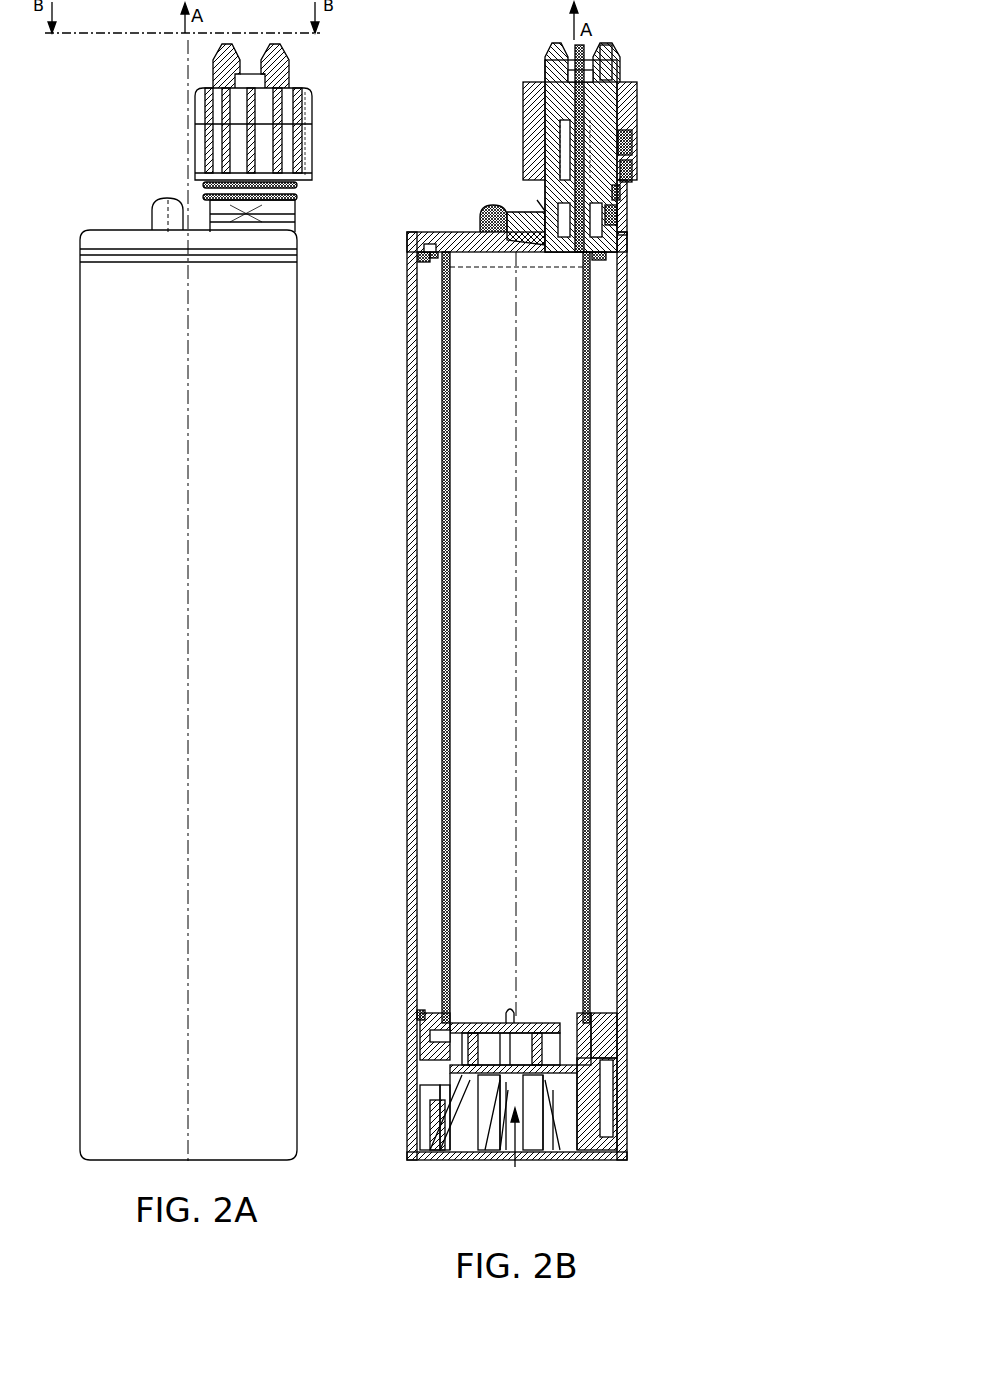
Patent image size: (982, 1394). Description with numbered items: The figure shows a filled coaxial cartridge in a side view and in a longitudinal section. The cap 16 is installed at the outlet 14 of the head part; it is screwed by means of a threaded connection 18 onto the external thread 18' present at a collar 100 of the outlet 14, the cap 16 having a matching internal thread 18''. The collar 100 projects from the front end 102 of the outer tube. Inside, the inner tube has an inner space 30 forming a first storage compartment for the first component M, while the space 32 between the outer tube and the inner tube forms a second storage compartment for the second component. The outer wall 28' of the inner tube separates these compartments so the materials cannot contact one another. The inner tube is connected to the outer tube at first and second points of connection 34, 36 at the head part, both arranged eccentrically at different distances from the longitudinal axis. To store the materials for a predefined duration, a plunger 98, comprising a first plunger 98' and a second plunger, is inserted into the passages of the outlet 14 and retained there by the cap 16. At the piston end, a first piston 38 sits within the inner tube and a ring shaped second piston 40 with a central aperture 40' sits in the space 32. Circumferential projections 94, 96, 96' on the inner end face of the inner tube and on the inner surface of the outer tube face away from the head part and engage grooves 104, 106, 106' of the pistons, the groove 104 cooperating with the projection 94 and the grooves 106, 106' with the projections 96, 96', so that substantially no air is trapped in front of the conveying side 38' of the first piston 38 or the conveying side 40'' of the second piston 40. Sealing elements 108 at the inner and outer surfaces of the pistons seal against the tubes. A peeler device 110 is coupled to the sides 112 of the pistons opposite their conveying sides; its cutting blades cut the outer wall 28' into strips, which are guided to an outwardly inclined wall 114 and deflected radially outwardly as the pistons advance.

In FIG. 2A, the outlet 14 is at (277, 203).
In FIG. 2A, the cap 16 is at (195, 150).
In FIG. 2B, the cap 16 is at (638, 100).
In FIG. 2A, the threaded connection 18 is at (174, 181).
In FIG. 2B, the external thread 18' is at (676, 182).
In FIG. 2B, the internal thread 18'' is at (677, 145).
In FIG. 2B, the outer wall 28' is at (563, 696).
In FIG. 2B, the inner space 30 is at (502, 636).
In FIG. 2B, the space 32 is at (516, 650).
In FIG. 2B, the first component M is at (516, 828).
In FIG. 2B, the first point of connection 34 is at (540, 100).
In FIG. 2B, the second point of connection 36 is at (487, 204).
In FIG. 2B, the first piston 38 is at (593, 976).
In FIG. 2B, the conveying side 38' is at (503, 1150).
In FIG. 2B, the second piston 40 is at (657, 1098).
In FIG. 2B, the aperture 40' is at (565, 1155).
In FIG. 2B, the conveying side 40'' is at (392, 999).
In FIG. 2B, the projection 94 is at (458, 257).
In FIG. 2B, the projection 96 is at (539, 292).
In FIG. 2B, the projection 96' is at (396, 303).
In FIG. 2B, the plunger 98 is at (661, 148).
In FIG. 2B, the first plunger 98' is at (671, 213).
In FIG. 2B, the collar 100 is at (537, 200).
In FIG. 2B, the front end 102 is at (440, 233).
In FIG. 2B, the groove 104 is at (430, 1030).
In FIG. 2B, the groove 106 is at (666, 1013).
In FIG. 2B, the groove 106' is at (663, 998).
In FIG. 2B, the sealing element 108 is at (437, 1012).
In FIG. 2B, the peeler device 110 is at (512, 1154).
In FIG. 2B, the side 112 is at (507, 1083).
In FIG. 2B, the outwardly inclined wall 114 is at (436, 1100).